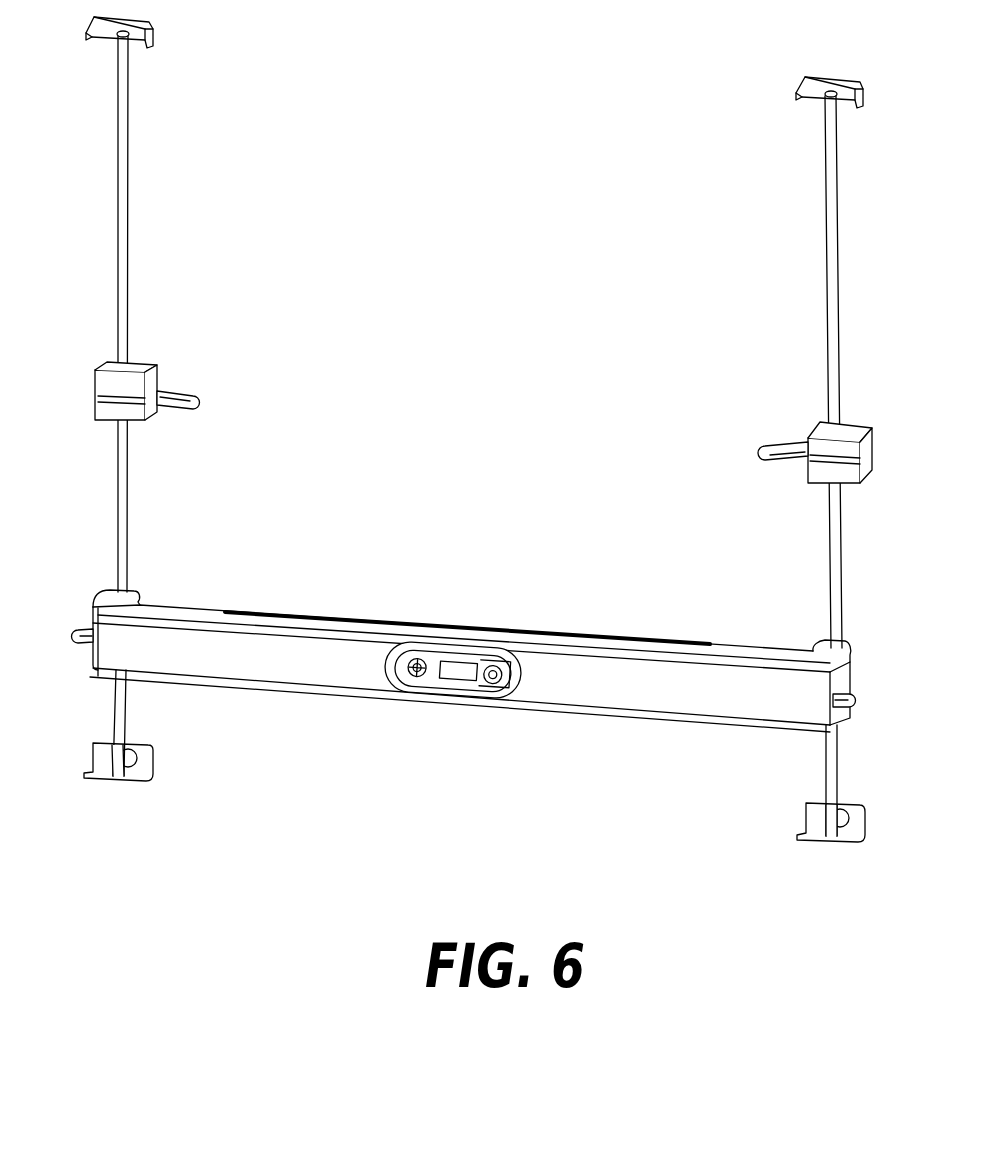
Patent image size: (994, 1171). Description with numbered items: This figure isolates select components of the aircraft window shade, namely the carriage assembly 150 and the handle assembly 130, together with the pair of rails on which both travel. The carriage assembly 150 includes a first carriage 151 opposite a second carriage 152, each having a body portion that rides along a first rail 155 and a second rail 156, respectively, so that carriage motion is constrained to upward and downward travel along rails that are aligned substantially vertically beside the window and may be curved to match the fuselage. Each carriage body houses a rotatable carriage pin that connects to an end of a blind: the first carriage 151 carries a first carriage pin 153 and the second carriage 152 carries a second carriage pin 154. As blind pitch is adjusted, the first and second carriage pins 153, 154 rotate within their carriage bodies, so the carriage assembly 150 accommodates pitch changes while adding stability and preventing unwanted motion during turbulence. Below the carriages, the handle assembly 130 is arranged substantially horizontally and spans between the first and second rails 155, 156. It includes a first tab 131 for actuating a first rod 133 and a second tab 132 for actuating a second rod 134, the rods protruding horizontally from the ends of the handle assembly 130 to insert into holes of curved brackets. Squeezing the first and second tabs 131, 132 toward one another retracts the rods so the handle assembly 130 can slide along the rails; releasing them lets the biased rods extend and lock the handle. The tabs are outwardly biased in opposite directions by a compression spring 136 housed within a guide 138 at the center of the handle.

The handle assembly 130 is at (653, 697).
The first tab 131 is at (412, 657).
The second tab 132 is at (488, 665).
The first rod 133 is at (78, 630).
The second rod 134 is at (855, 701).
The compression spring 136 is at (412, 683).
The guide 138 is at (443, 680).
The carriage assembly 150 is at (288, 229).
The first carriage 151 is at (100, 387).
The second carriage 152 is at (860, 426).
The first carriage pin 153 is at (182, 392).
The second carriage pin 154 is at (780, 442).
The first rail 155 is at (118, 197).
The second rail 156 is at (838, 240).